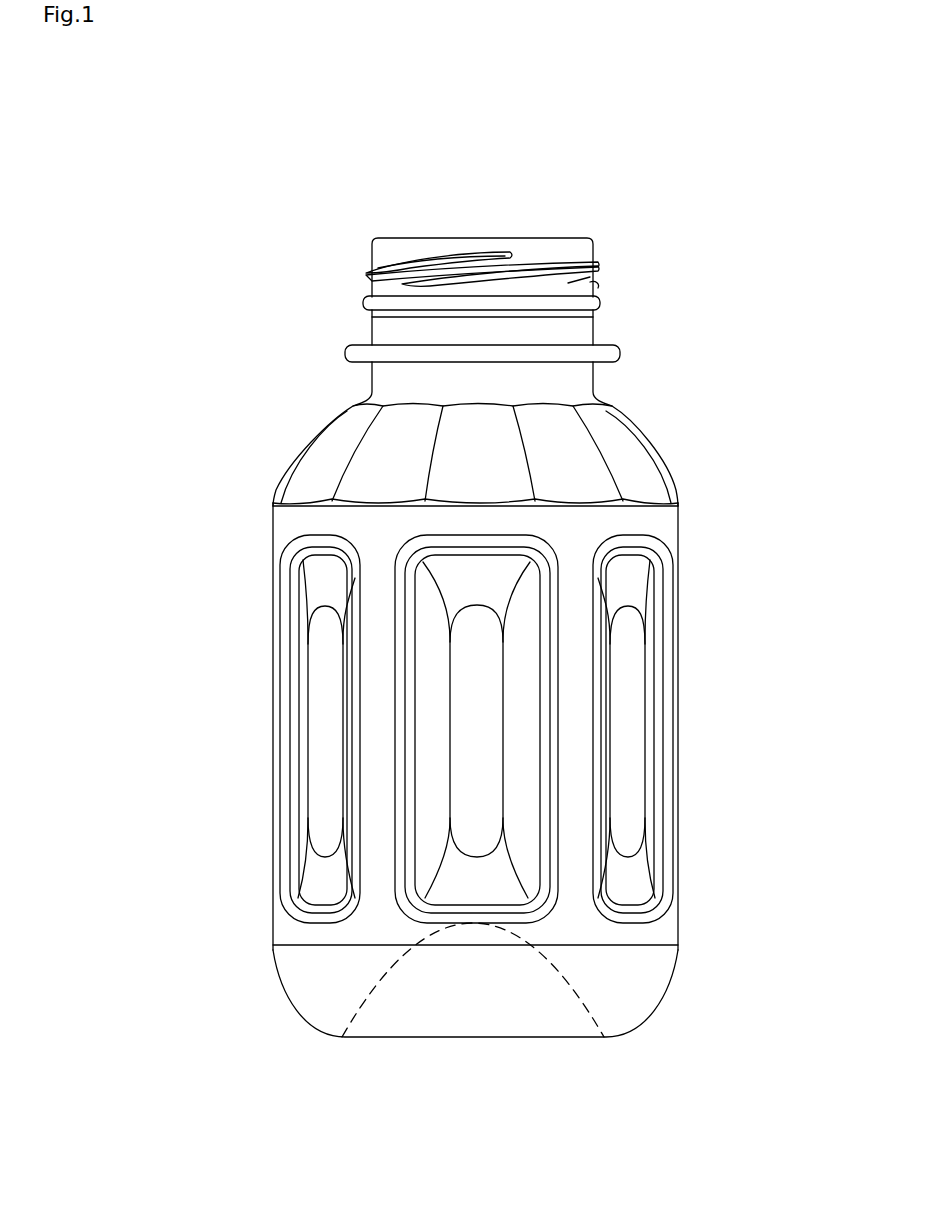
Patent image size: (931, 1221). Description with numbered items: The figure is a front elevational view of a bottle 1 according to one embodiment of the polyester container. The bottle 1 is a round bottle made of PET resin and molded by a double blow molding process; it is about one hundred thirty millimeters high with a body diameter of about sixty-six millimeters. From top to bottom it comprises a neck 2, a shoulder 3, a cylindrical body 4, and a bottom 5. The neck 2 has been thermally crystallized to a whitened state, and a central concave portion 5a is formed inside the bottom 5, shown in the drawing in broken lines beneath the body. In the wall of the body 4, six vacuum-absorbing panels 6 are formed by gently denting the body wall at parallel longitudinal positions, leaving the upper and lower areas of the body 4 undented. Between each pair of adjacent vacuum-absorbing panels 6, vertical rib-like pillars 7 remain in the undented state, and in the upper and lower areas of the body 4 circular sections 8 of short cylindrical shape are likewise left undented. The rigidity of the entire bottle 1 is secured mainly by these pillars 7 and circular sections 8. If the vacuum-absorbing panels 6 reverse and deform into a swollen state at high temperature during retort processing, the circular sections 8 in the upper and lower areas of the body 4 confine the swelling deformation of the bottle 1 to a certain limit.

The bottle 1 is at (652, 192).
The neck 2 is at (604, 275).
The shoulder 3 is at (638, 452).
The cylindrical body 4 is at (682, 648).
The bottom 5 is at (630, 980).
The central concave portion 5a is at (570, 986).
The vacuum-absorbing panels 6 is at (485, 740).
The pillars 7 is at (573, 720).
The circular sections 8 is at (552, 525).